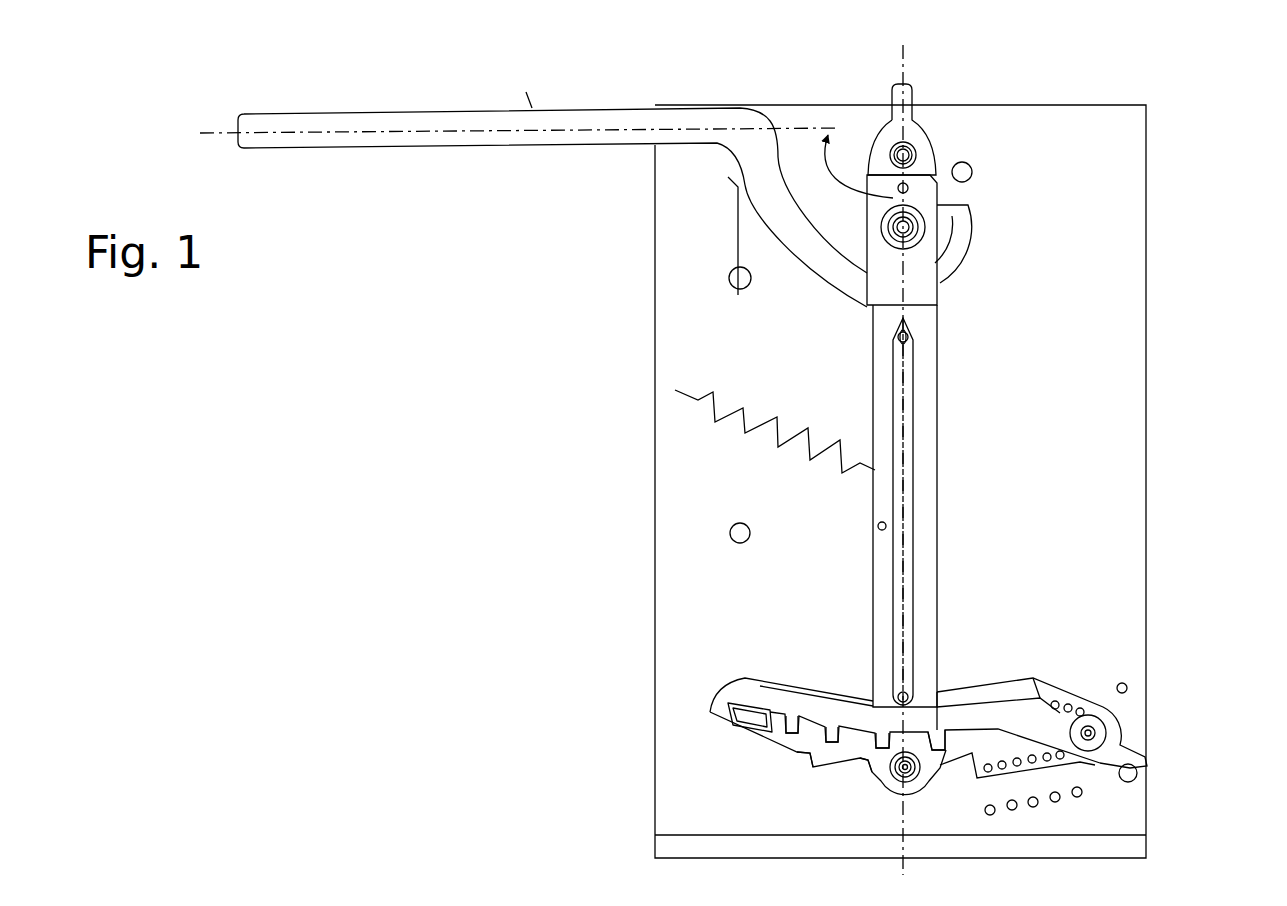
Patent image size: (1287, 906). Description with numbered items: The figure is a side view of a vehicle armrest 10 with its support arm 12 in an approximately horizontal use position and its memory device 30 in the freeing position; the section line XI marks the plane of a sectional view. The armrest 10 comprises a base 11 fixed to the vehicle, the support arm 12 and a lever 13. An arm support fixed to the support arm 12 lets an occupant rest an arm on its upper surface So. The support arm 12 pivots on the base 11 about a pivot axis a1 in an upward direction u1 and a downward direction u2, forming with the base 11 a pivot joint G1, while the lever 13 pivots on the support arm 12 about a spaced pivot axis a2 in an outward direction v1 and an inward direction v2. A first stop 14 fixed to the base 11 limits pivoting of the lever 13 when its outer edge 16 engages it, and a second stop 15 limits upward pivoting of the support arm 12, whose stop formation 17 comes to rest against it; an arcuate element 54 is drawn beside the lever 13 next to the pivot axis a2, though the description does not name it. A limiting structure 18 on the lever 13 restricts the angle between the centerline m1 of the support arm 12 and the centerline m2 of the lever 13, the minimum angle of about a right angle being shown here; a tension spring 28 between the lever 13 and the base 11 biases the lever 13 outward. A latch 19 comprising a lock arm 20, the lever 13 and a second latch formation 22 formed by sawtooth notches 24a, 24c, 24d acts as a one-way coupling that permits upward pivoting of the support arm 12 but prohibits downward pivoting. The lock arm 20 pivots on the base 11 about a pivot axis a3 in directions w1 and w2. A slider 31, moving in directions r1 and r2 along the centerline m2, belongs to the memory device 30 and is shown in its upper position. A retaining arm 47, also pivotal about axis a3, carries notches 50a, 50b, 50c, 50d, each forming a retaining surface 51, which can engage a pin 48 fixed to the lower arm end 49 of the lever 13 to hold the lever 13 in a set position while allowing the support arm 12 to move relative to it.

The armrest 10 is at (1180, 128).
The base 11 is at (1113, 405).
The support arm 12 is at (480, 140).
The lever 13 is at (880, 360).
The first stop 14 is at (745, 543).
The second stop 15 is at (972, 172).
The outer edge 16 is at (873, 575).
The stop formation 17 is at (905, 115).
The limiting structure 18 is at (850, 273).
The latch 19 is at (985, 680).
The lock arm 20 is at (1033, 690).
The second latch formation 22 is at (790, 757).
The sawtooth notch 24a is at (968, 758).
The sawtooth notch 24c is at (860, 765).
The sawtooth notch 24d is at (800, 758).
The tension spring 28 is at (757, 430).
The memory device 30 is at (1002, 752).
The slider 31 is at (907, 410).
The retaining arm 47 is at (1007, 707).
The pin 48 is at (900, 785).
The lower arm end 49 is at (925, 783).
The notch 50a is at (943, 738).
The notch 50b is at (886, 735).
The notch 50c is at (835, 727).
The notch 50d is at (793, 718).
The retaining surface 51 is at (795, 746).
The stop segment 54 is at (978, 218).
The upper surface So is at (532, 108).
The pivot joint G1 is at (890, 150).
The pivot axis a1 is at (915, 152).
The pivot axis a2 is at (912, 235).
The pivot axis a3 is at (1095, 733).
The centerline m1 is at (329, 134).
The centerline m2 is at (903, 390).
The upward direction u1 is at (697, 100).
The downward direction u2 is at (693, 158).
The outward direction v1 is at (852, 518).
The inward direction v2 is at (957, 515).
The direction r1 is at (925, 512).
The direction r2 is at (925, 533).
The pivot direction w1 is at (1097, 693).
The pivot direction w2 is at (1090, 770).
The section line XI is at (900, 64).